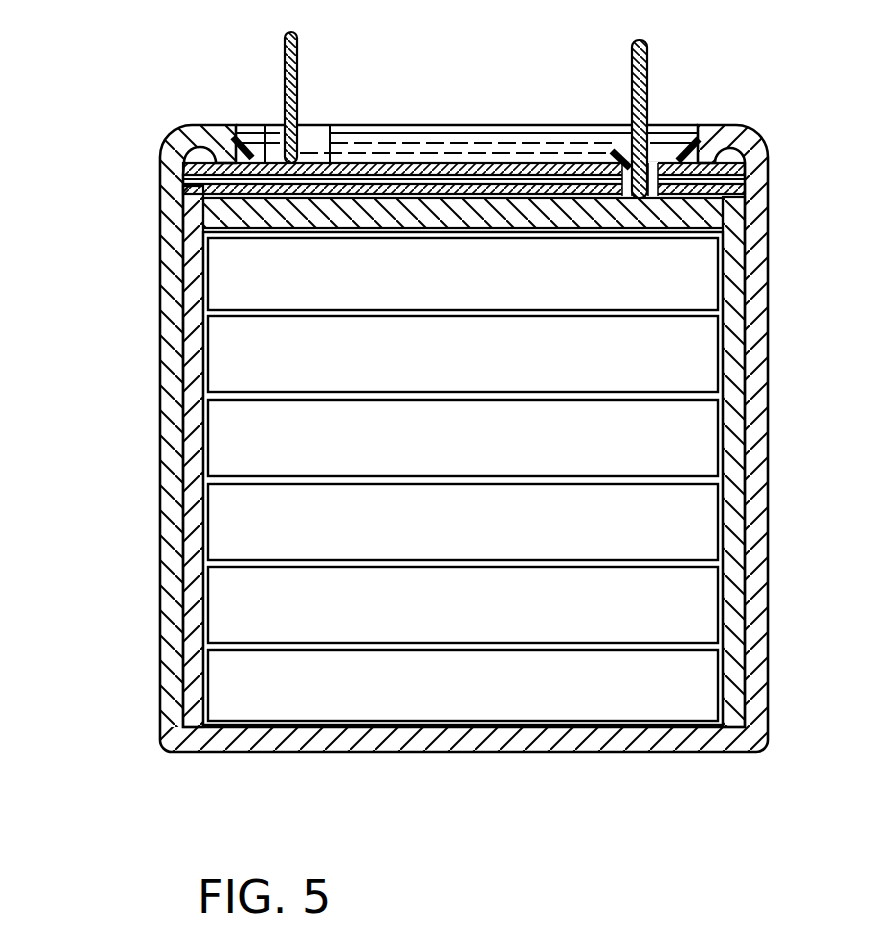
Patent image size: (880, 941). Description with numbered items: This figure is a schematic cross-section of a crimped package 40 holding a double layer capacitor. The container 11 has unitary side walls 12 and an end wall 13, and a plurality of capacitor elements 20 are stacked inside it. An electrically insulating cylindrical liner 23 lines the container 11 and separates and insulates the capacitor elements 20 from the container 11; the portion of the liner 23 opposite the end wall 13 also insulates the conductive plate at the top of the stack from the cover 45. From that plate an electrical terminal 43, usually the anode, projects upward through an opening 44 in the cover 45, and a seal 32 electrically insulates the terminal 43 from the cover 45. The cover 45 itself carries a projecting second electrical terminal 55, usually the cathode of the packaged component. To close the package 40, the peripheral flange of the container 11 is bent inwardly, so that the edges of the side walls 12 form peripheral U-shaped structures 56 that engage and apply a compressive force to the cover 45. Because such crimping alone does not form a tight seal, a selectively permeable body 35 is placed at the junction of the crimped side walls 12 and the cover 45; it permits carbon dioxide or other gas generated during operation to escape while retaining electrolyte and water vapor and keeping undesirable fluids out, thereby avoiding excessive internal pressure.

The container 11 is at (754, 424).
The side walls 12 is at (161, 650).
The end wall 13 is at (397, 754).
The capacitor elements 20 is at (690, 518).
The cylindrical liner 23 is at (735, 284).
The seal 32 is at (649, 165).
The selectively permeable body 35 is at (259, 148).
The package 40 is at (128, 468).
The electrical terminal 43 is at (632, 58).
The opening 44 is at (623, 160).
The cover 45 is at (330, 165).
The second electrical terminal 55 is at (300, 54).
The peripheral U-shaped structures 56 is at (207, 128).